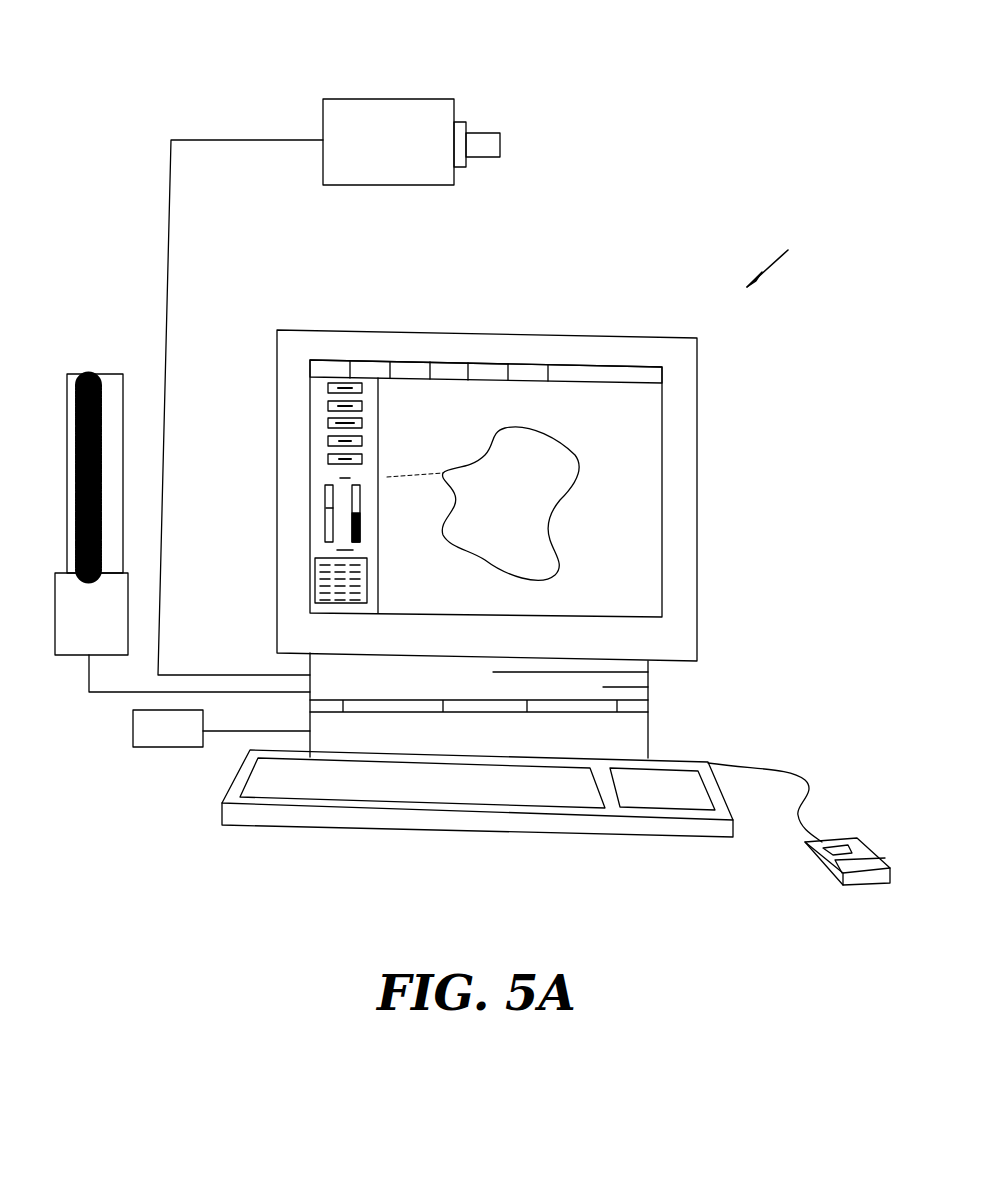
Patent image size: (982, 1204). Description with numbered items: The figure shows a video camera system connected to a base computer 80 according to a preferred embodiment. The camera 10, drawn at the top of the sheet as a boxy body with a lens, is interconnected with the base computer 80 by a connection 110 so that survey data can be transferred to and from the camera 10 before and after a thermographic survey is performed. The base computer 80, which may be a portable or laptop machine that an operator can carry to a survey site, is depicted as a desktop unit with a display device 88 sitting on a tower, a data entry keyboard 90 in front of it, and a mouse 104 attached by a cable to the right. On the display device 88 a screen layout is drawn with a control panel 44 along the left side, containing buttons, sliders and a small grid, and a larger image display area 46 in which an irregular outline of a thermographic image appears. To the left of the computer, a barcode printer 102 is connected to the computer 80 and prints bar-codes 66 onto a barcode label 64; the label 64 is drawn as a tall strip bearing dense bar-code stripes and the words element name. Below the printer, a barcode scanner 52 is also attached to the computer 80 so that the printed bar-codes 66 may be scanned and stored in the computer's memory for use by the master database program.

The camera 10 is at (380, 118).
The cable connection 110 is at (222, 137).
The base computer 80 is at (789, 254).
The display device 88 is at (678, 492).
The control panel 44 is at (320, 382).
The image display area 46 is at (595, 388).
The barcode label 64 is at (110, 388).
The bar-codes 66 is at (80, 385).
The barcode printer 102 is at (70, 632).
The barcode scanner 52 is at (170, 733).
The data entry keyboard 90 is at (270, 813).
The mouse 104 is at (864, 855).